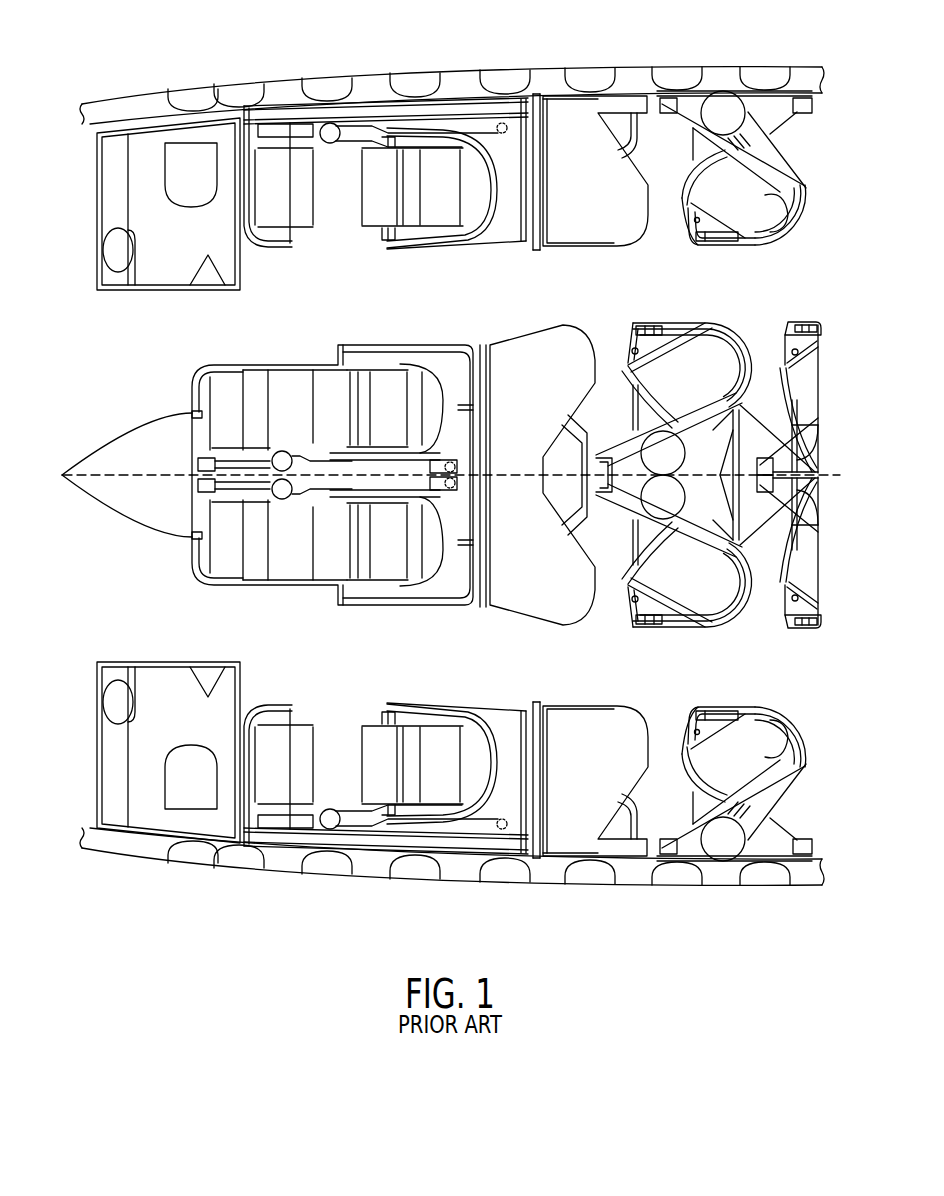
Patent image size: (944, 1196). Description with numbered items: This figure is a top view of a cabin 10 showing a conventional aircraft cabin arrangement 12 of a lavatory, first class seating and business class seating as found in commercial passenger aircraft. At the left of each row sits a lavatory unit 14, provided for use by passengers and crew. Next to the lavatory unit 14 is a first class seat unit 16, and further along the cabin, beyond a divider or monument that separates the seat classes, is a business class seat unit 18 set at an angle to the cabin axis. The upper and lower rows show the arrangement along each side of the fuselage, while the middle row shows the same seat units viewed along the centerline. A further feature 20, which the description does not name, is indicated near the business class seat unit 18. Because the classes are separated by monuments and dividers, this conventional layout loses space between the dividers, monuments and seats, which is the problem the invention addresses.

The cabin 10 is at (632, 73).
The aircraft cabin arrangement 12 is at (70, 138).
The lavatory unit 14 is at (97, 205).
The first class seat unit 16 is at (287, 125).
The business class seat unit 18 is at (806, 191).
The partition 20 is at (768, 267).